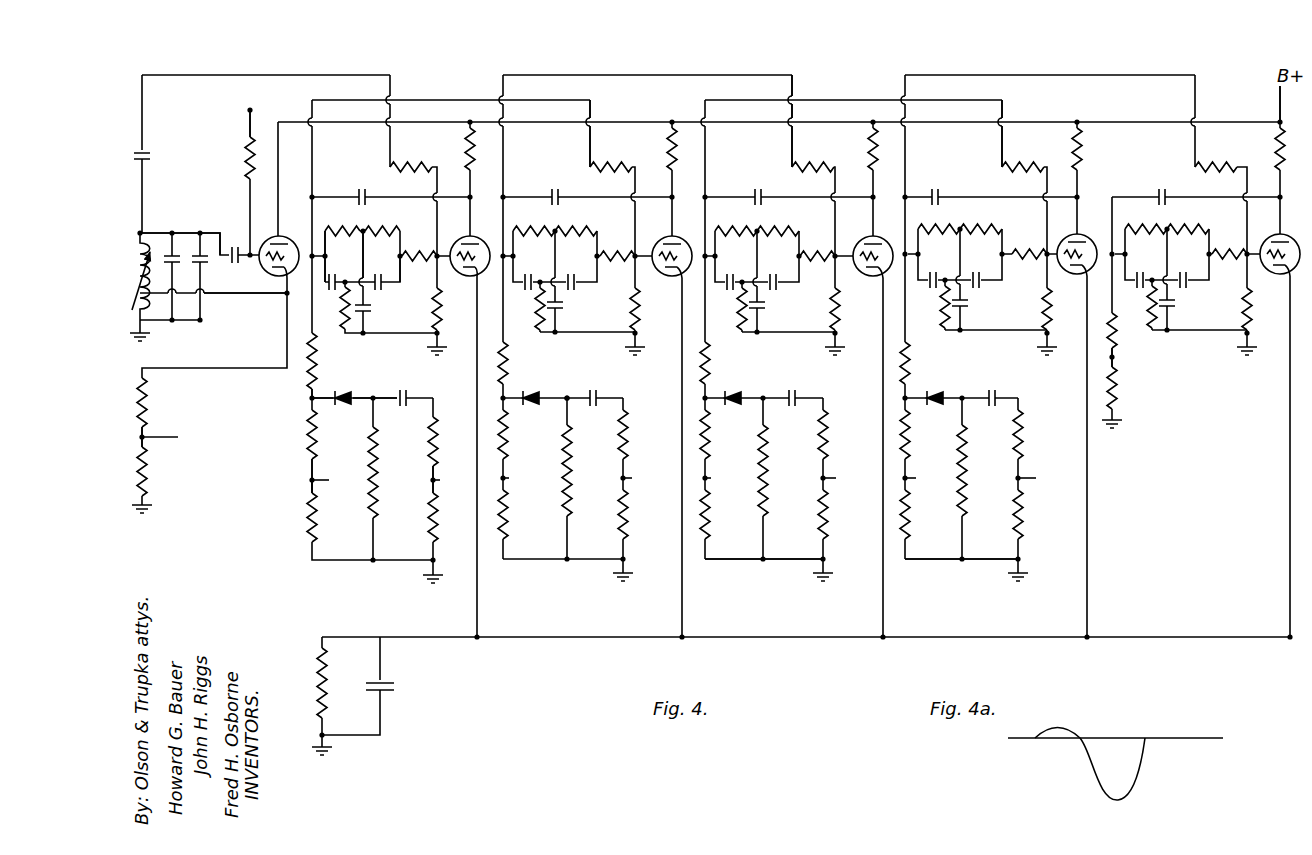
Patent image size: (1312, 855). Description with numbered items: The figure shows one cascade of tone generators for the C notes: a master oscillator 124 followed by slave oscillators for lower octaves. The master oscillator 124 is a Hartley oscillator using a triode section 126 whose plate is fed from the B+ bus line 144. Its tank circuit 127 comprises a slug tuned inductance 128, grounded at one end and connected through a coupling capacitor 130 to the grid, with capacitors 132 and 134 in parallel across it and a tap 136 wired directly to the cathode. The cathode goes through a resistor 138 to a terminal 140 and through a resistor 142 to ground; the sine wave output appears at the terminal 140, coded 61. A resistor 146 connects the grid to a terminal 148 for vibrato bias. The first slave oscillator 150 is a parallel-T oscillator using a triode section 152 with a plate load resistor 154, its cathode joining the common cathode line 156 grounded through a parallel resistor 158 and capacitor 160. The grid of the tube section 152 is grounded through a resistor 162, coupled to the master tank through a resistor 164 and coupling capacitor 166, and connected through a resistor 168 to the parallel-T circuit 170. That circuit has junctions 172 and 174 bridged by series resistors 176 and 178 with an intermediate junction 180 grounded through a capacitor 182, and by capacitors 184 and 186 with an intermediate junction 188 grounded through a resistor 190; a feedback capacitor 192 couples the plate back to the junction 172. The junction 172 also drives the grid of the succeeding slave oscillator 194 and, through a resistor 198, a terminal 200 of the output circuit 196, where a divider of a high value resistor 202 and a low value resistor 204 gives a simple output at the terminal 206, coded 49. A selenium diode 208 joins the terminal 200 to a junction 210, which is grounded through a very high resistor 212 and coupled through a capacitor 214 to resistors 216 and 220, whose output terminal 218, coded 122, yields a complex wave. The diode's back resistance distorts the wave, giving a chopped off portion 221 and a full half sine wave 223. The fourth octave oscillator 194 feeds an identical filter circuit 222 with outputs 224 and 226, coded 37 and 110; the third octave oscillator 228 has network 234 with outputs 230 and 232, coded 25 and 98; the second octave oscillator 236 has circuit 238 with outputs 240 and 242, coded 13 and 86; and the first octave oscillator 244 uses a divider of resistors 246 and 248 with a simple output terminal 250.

In FIG. 4, the coupling capacitor 166 is at (160, 151).
In FIG. 4, the terminal 148 is at (250, 110).
In FIG. 4, the resistor 146 is at (247, 153).
In FIG. 4, the master oscillator 124 is at (216, 222).
In FIG. 4, the coupling capacitor 130 is at (233, 242).
In FIG. 4, the capacitor 132 is at (174, 232).
In FIG. 4, the slug tuned inductance 128 is at (155, 273).
In FIG. 4, the tap 136 is at (147, 297).
In FIG. 4, the capacitor 134 is at (202, 265).
In FIG. 4, the triode section 126 is at (288, 238).
In FIG. 4, the tank circuit 127 is at (213, 304).
In FIG. 4, the resistor 138 is at (147, 410).
In FIG. 4, the terminal 140 is at (143, 437).
In FIG. 4, the terminal 61 is at (213, 440).
In FIG. 4, the resistor 142 is at (146, 484).
In FIG. 4, the feedback capacitor 192 is at (362, 190).
In FIG. 4, the parallel-T circuit 170 is at (331, 226).
In FIG. 4, the first slave oscillator 150 is at (409, 216).
In FIG. 4, the resistor 164 is at (412, 148).
In FIG. 4, the plate load resistor 154 is at (466, 156).
In FIG. 4, the triode tube section 152 is at (472, 235).
In FIG. 4, the resistor 176 is at (350, 230).
In FIG. 4, the resistor 178 is at (378, 230).
In FIG. 4, the junction 174 is at (404, 253).
In FIG. 4, the junction 172 is at (326, 257).
In FIG. 4, the intermediate junction 188 is at (348, 270).
In FIG. 4, the intermediate junction 180 is at (363, 280).
In FIG. 4, the resistor 168 is at (401, 281).
In FIG. 4, the capacitor 186 is at (383, 285).
In FIG. 4, the capacitor 182 is at (371, 308).
In FIG. 4, the capacitor 184 is at (350, 303).
In FIG. 4, the resistor 162 is at (438, 310).
In FIG. 4, the resistor 190 is at (343, 330).
In FIG. 4, the resistor 198 is at (308, 367).
In FIG. 4, the terminal point 200 is at (308, 398).
In FIG. 4, the resistor 202 is at (308, 430).
In FIG. 4, the selenium diode 208 is at (349, 394).
In FIG. 4, the junction 210 is at (373, 396).
In FIG. 4, the capacitor 214 is at (407, 397).
In FIG. 4, the resistor 216 is at (438, 431).
In FIG. 4, the resistor 212 is at (377, 452).
In FIG. 4, the output terminal 218 is at (432, 482).
In FIG. 4, the output terminal 122 is at (460, 482).
In FIG. 4, the resistor 220 is at (430, 520).
In FIG. 4, the resistor 204 is at (314, 516).
In FIG. 4, the terminal 49 is at (352, 483).
In FIG. 4, the output circuit 196 is at (300, 473).
In FIG. 4, the output terminal 206 is at (307, 480).
In FIG. 4, the succeeding slave oscillator 194 is at (619, 231).
In FIG. 4, the output or filter circuit 222 is at (569, 390).
In FIG. 4, the terminal 37 is at (528, 478).
In FIG. 4, the terminal 224 is at (503, 482).
In FIG. 4, the terminal 110 is at (655, 478).
In FIG. 4, the terminal 226 is at (625, 482).
In FIG. 4, the common cathode line 156 is at (508, 637).
In FIG. 4, the resistor 158 is at (324, 668).
In FIG. 4, the capacitor 160 is at (392, 684).
In FIG. 4, the third octave slave oscillator 228 is at (817, 238).
In FIG. 4, the terminal 25 is at (735, 477).
In FIG. 4, the terminal 230 is at (705, 482).
In FIG. 4, the terminal 98 is at (858, 477).
In FIG. 4, the terminal 232 is at (825, 482).
In FIG. 4, the output or filter network 234 is at (739, 565).
In FIG. 4, the second octave slave oscillator 236 is at (1026, 238).
In FIG. 4, the terminal 240 is at (907, 470).
In FIG. 4, the terminal 13 is at (933, 475).
In FIG. 4, the terminal 242 is at (1021, 472).
In FIG. 4, the terminal 86 is at (1057, 474).
In FIG. 4, the output or filter circuit 238 is at (947, 565).
In FIG. 4, the first octave slave oscillator 244 is at (1236, 240).
In FIG. 4, the resistor 246 is at (1105, 335).
In FIG. 4, the intermediate output terminal 250 is at (1114, 359).
In FIG. 4, the resistor 248 is at (1114, 408).
In FIG. 4, the B+ bus line 144 is at (1280, 102).
In FIG. 4A, the chopped off portion of distorted wave 221 is at (1064, 727).
In FIG. 4A, the full half sine wave 223 is at (1128, 800).